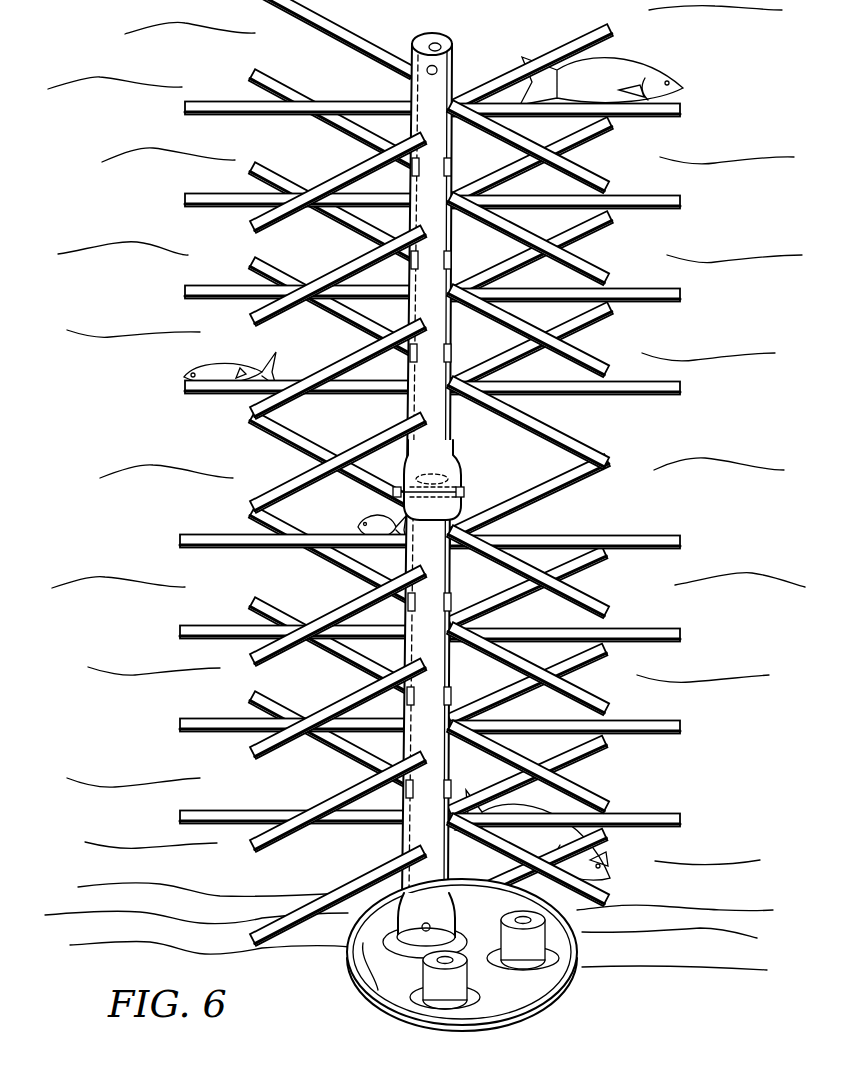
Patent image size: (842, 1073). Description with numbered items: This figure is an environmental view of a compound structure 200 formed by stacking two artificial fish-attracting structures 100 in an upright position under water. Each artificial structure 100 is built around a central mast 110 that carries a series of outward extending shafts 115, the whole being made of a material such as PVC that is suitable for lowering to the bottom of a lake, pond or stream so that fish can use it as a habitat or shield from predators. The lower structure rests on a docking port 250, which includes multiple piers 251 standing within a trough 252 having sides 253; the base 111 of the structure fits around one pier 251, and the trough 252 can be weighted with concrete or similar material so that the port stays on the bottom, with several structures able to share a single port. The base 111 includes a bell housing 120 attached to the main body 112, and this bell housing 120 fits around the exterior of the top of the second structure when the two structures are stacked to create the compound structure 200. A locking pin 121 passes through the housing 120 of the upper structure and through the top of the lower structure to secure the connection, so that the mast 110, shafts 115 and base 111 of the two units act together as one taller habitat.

The artificial structure 100 is at (438, 473).
The central mast 110 is at (435, 440).
The base 111 is at (455, 504).
The main body 112 is at (438, 861).
The outward extending shafts 115 is at (600, 450).
The bell housing 120 is at (395, 492).
The locking pin 121 is at (463, 494).
The compound structure 200 is at (438, 455).
The docking port 250 is at (475, 960).
The pier 251 is at (447, 983).
The trough 252 is at (512, 1012).
The sides 253 is at (378, 990).